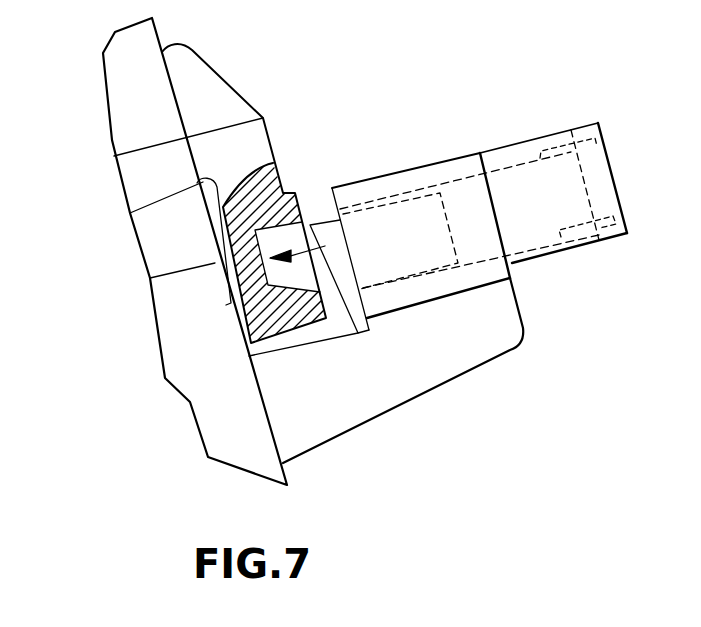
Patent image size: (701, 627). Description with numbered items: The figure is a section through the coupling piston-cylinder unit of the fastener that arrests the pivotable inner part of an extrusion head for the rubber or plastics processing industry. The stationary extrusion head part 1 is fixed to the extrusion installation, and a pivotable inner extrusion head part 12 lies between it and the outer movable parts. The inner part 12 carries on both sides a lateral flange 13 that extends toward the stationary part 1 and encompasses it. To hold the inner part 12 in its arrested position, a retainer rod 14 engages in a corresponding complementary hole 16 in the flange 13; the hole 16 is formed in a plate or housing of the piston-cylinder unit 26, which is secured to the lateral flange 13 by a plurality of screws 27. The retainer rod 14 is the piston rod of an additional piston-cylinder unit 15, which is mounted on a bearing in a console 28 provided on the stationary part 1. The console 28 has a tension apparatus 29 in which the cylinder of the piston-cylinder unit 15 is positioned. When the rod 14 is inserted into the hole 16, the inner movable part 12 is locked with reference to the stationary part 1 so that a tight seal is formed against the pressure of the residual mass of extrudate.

The stationary extrusion head part 1 is at (220, 445).
The pivotable inner extrusion head part 12 is at (133, 182).
The lateral flange 13 is at (198, 67).
The retainer rod 14 is at (323, 278).
The additional piston-cylinder unit 15 is at (573, 200).
The complementary hole 16 is at (283, 228).
The plate or housing of the piston-cylinder unit 26 is at (585, 125).
The screws 27 is at (608, 215).
The console 28 is at (500, 330).
The tension apparatus 29 is at (378, 187).